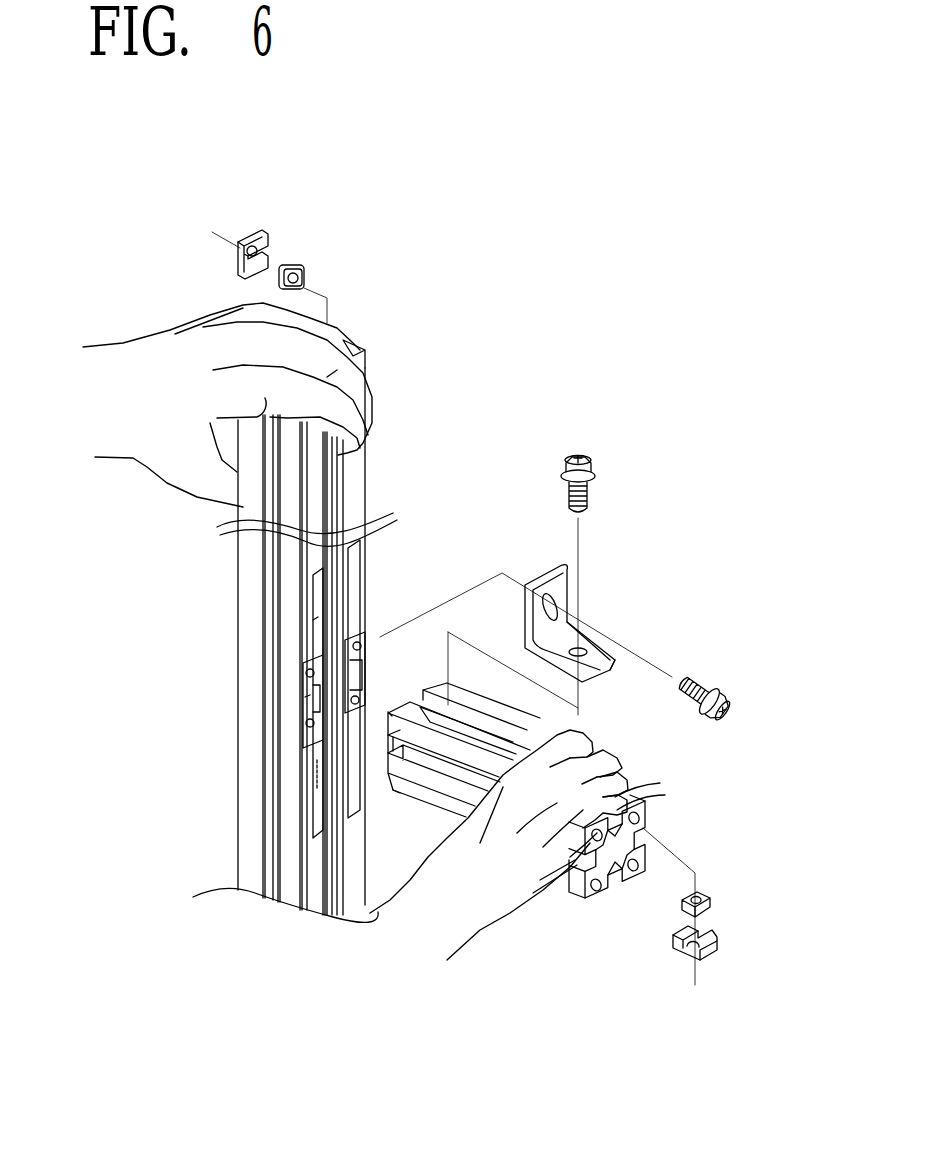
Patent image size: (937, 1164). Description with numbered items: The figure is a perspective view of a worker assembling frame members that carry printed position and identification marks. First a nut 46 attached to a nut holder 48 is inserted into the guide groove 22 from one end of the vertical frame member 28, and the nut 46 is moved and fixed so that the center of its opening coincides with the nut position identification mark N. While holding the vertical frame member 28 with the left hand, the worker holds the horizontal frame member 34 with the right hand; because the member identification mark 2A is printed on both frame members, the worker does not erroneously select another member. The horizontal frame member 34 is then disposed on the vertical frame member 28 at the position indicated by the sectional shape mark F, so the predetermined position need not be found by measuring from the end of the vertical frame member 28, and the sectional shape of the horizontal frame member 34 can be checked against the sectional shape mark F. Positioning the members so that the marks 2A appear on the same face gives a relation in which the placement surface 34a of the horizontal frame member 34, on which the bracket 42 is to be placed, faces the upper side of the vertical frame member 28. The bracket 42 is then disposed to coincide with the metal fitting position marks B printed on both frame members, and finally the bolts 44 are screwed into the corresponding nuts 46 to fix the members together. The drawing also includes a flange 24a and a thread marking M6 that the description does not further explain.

The guide groove 22 is at (350, 337).
The vertical frame member 28 is at (240, 562).
The horizontal frame member 34 is at (565, 862).
The placement surface 34a is at (392, 695).
The flange of frame member 24a is at (453, 803).
The bracket 42 is at (595, 678).
The bolt 44 is at (590, 455).
The nut 46 is at (298, 262).
The nut holder 48 is at (265, 232).
The metal fitting position mark B is at (337, 552).
The M6 thread marking M6 is at (355, 592).
The nut position identification mark N is at (313, 620).
The member identification mark 2A is at (290, 673).
The sectional shape mark F is at (307, 697).